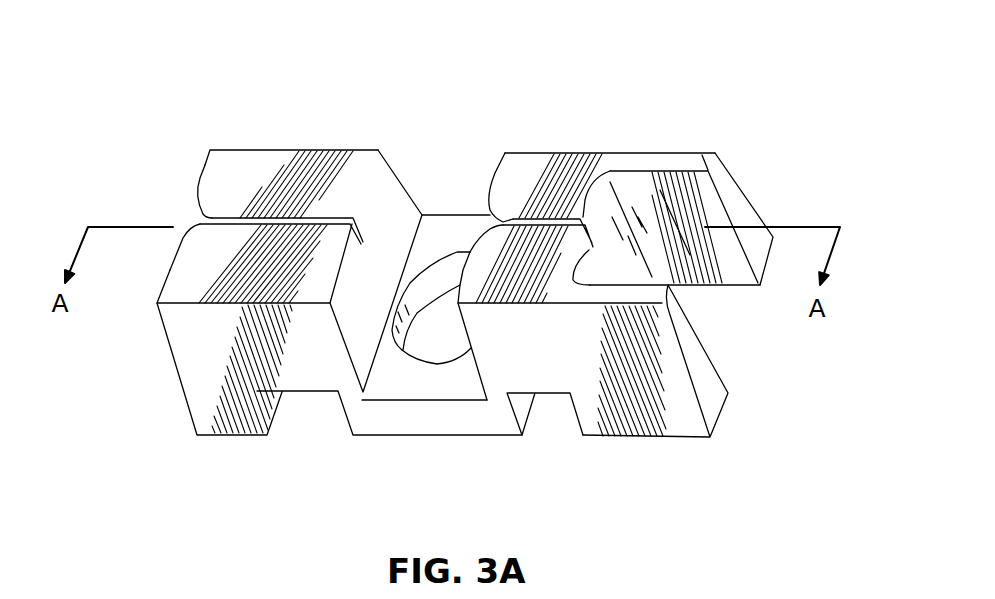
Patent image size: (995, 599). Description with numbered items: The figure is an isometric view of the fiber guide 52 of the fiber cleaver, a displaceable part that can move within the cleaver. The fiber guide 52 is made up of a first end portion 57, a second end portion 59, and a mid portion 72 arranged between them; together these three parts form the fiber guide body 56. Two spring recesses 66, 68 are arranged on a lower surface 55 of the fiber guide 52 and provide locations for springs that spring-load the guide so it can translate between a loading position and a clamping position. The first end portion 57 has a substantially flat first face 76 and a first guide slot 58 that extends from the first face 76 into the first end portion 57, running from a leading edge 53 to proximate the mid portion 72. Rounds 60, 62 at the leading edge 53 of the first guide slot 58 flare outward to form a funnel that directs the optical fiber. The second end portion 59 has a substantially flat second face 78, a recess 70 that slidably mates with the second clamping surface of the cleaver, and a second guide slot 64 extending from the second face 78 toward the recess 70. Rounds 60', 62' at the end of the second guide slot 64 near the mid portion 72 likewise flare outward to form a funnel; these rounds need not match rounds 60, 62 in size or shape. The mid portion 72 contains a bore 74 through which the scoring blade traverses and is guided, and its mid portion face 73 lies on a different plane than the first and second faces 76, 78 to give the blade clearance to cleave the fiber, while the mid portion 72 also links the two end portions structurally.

The fiber guide 52 is at (162, 403).
The leading edge 53 is at (157, 312).
The lower surface 55 is at (665, 435).
The fiber guide body 56 is at (363, 140).
The first end portion 57 is at (275, 165).
The first guide slot 58 is at (298, 220).
The second end portion 59 is at (528, 167).
The round 60 is at (178, 166).
The round 60' is at (500, 140).
The round 62 is at (152, 225).
The round 62' is at (630, 297).
The second guide slot 64 is at (630, 152).
The spring recess 66 is at (270, 405).
The spring recess 68 is at (520, 403).
The recess 70 is at (683, 203).
The mid portion 72 is at (397, 384).
The mid portion face 73 is at (455, 374).
The bore 74 is at (430, 283).
The first face 76 is at (223, 165).
The second face 78 is at (568, 195).